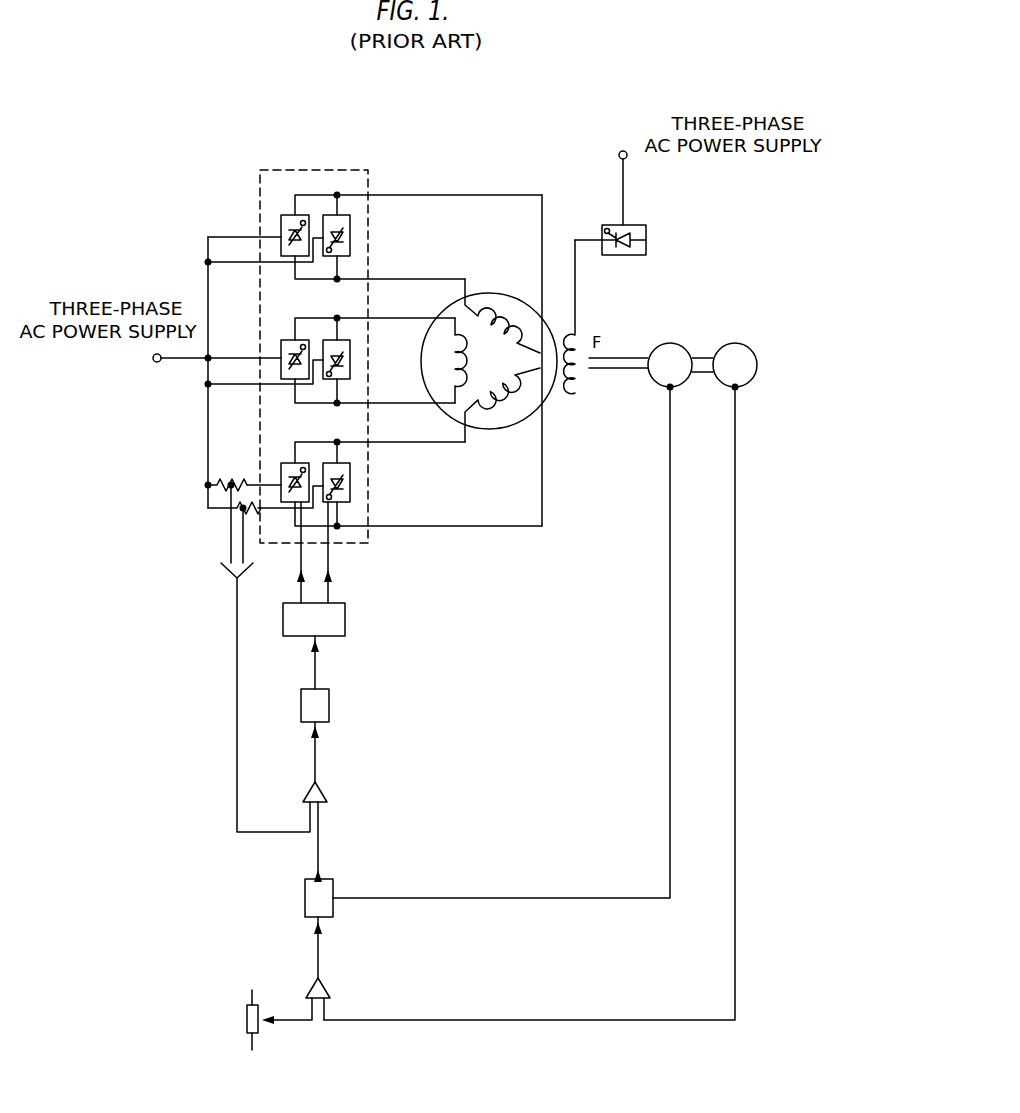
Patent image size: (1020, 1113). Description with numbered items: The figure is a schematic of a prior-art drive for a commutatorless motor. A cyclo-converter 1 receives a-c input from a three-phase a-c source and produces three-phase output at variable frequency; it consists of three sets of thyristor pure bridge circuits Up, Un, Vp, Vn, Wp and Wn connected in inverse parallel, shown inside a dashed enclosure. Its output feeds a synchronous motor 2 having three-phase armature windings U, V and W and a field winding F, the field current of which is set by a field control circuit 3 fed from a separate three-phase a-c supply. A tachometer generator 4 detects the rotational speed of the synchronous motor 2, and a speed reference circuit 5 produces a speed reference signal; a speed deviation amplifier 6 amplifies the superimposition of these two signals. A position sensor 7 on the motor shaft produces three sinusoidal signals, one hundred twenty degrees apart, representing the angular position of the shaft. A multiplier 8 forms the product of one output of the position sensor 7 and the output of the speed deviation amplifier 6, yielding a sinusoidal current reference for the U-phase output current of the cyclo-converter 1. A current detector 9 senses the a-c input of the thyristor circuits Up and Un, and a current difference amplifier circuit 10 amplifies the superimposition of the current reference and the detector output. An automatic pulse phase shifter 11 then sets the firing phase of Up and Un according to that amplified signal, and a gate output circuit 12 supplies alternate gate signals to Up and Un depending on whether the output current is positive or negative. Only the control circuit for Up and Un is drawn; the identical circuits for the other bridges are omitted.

The cyclo-converter 1 is at (372, 188).
The synchronous motor 2 is at (508, 292).
The field control circuit 3 is at (646, 250).
The tachometer generator 4 is at (741, 343).
The speed reference circuit 5 is at (247, 1020).
The speed deviation amplifier 6 is at (330, 986).
The position sensor 7 is at (672, 343).
The multiplier 8 is at (333, 888).
The current detector 9 is at (235, 509).
The current difference amplifier circuit 10 is at (327, 793).
The automatic pulse phase shifter 11 is at (329, 705).
The gate output circuit 12 is at (345, 616).